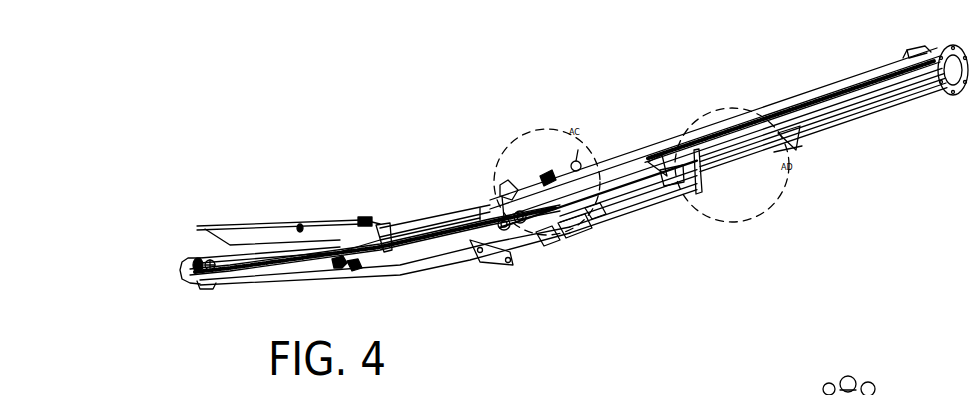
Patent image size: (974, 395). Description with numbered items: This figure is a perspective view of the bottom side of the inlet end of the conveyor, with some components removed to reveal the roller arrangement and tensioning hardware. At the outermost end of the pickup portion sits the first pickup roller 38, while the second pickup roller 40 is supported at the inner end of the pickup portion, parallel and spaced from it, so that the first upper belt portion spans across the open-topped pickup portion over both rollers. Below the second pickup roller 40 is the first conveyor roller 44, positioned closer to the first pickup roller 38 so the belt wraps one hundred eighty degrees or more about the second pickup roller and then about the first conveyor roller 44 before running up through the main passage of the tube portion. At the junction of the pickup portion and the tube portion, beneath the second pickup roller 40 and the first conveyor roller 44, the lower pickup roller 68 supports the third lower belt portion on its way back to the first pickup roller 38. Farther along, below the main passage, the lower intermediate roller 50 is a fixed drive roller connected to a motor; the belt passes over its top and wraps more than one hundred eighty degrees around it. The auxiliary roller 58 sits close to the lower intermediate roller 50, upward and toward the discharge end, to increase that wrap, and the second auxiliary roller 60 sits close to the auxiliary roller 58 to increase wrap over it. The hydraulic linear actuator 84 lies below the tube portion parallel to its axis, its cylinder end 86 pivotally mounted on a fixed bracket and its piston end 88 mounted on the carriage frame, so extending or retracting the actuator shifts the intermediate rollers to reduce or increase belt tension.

The first pickup roller 38 is at (197, 260).
The second pickup roller 40 is at (344, 250).
The first conveyor roller 44 is at (340, 268).
The lower pickup roller 68 is at (355, 271).
The lower intermediate roller 50 is at (522, 250).
The auxiliary roller 58 is at (537, 248).
The second auxiliary roller 60 is at (547, 248).
The piston end 88 is at (592, 205).
The hydraulic linear actuator 84 is at (703, 178).
The cylinder end 86 is at (785, 158).